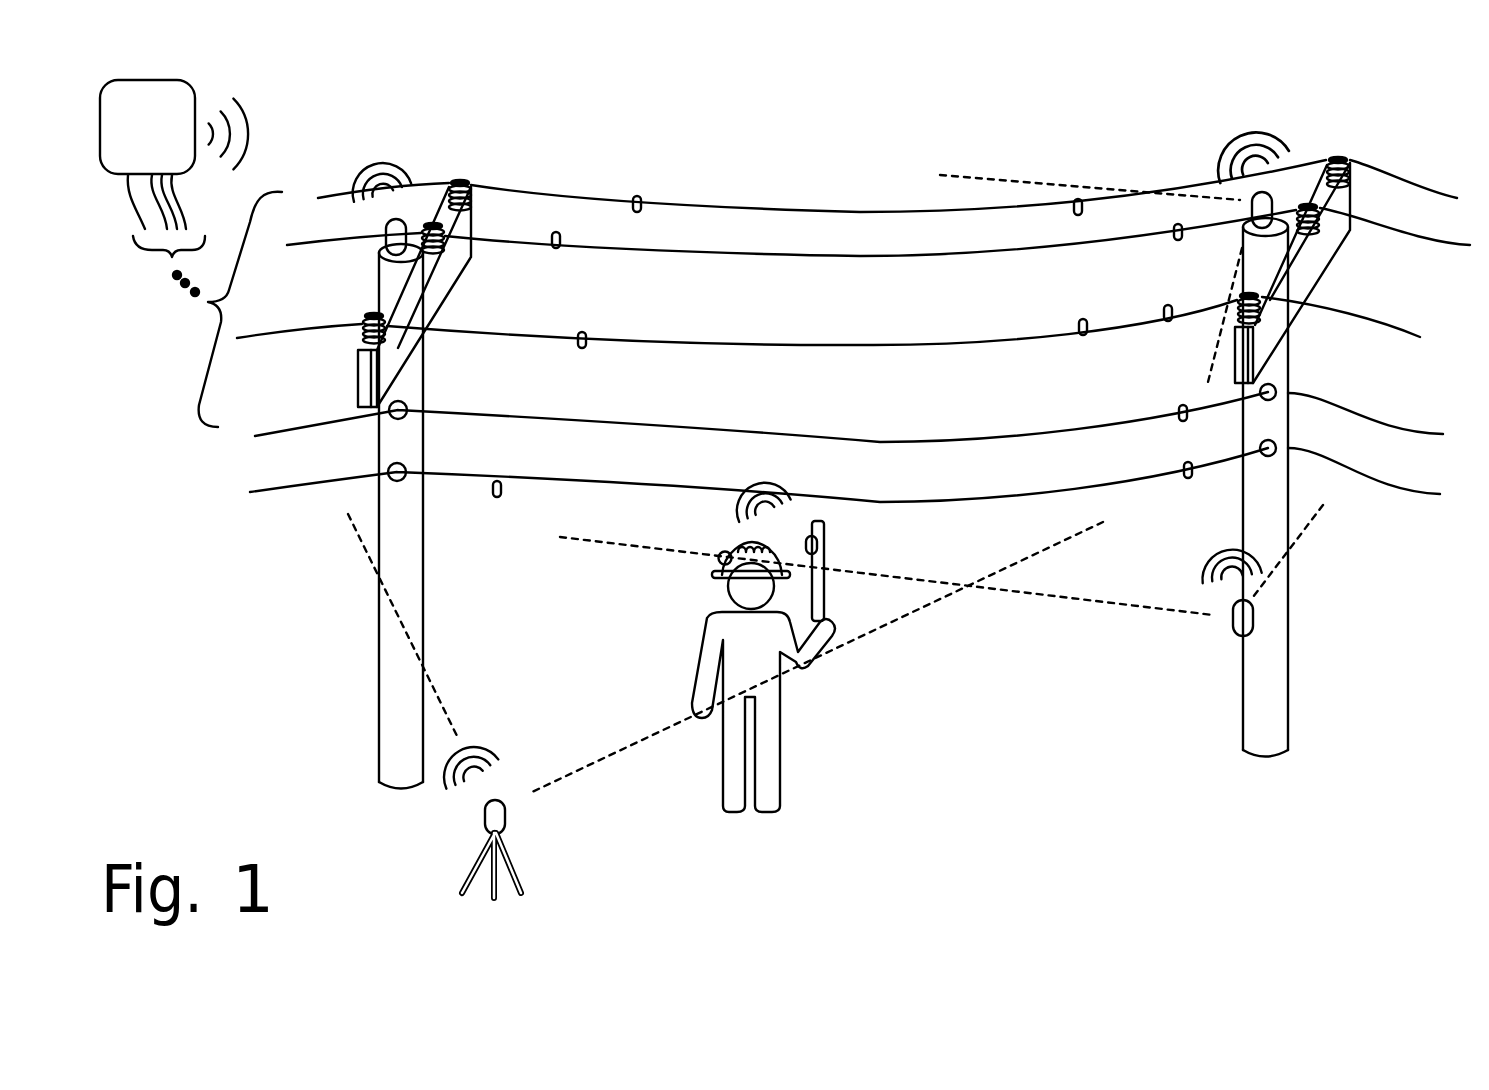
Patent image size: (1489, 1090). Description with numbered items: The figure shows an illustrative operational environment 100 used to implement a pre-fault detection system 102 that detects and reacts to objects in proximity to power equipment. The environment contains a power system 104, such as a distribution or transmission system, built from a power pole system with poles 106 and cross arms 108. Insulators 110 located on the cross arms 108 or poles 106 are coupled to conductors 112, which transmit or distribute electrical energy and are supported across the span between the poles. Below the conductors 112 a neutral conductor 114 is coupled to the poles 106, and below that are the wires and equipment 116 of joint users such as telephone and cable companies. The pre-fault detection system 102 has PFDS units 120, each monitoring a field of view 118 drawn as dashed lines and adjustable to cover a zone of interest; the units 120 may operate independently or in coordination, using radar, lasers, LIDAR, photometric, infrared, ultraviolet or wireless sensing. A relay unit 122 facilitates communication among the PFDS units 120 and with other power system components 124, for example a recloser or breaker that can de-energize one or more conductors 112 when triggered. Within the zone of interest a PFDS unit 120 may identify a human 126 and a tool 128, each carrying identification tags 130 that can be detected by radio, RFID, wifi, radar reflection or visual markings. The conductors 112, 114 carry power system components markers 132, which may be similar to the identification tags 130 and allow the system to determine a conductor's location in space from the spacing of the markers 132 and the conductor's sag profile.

The operational environment 100 is at (1187, 77).
The pre-fault detection system (PFDS) 102 is at (1220, 173).
The power system 104 is at (785, 125).
The pole 106 is at (379, 659).
The cross arm 108 is at (358, 380).
The insulator 110 is at (460, 182).
The conductor 112 is at (760, 207).
The neutral conductor 114 is at (583, 433).
The wires and equipment of joint users 116 is at (613, 490).
The field of view 118 is at (1078, 183).
The PFDS unit 120 is at (1272, 192).
The relay unit 122 is at (373, 222).
The power system component 124 is at (169, 143).
The human 126 is at (777, 708).
The tool 128 is at (826, 592).
The identification tag 130 is at (720, 562).
The power system components marker 132 is at (1187, 518).